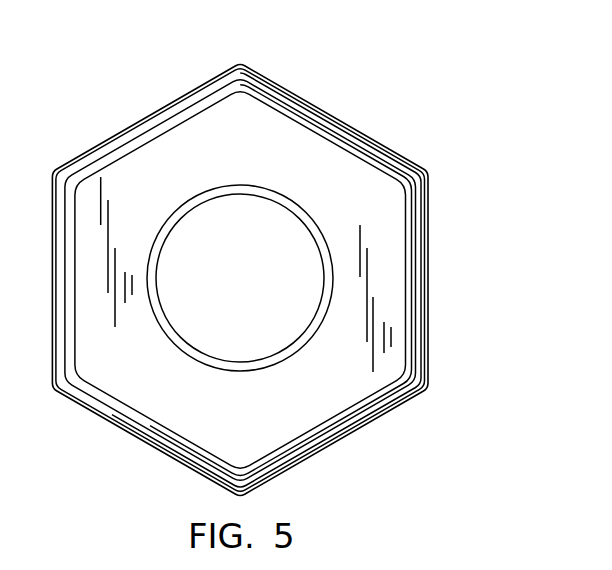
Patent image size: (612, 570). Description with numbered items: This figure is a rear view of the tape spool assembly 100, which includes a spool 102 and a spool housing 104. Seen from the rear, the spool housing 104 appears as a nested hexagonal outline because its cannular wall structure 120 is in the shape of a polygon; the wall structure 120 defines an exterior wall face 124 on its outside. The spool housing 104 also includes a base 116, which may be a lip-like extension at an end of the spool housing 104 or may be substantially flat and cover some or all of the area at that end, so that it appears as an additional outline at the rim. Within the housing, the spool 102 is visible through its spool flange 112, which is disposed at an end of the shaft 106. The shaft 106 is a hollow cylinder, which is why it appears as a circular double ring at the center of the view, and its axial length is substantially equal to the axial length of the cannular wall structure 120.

The spool assembly 100 is at (102, 105).
The spool 102 is at (138, 393).
The spool housing 104 is at (325, 97).
The shaft 106 is at (256, 193).
The spool flange 112 is at (330, 403).
The base 116 is at (376, 160).
The cannular wall structure 120 is at (429, 232).
The exterior wall face 124 is at (428, 293).